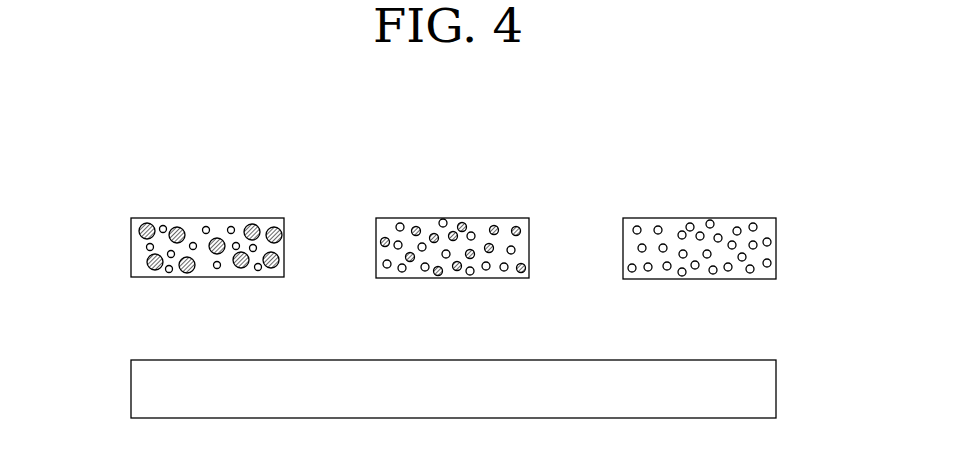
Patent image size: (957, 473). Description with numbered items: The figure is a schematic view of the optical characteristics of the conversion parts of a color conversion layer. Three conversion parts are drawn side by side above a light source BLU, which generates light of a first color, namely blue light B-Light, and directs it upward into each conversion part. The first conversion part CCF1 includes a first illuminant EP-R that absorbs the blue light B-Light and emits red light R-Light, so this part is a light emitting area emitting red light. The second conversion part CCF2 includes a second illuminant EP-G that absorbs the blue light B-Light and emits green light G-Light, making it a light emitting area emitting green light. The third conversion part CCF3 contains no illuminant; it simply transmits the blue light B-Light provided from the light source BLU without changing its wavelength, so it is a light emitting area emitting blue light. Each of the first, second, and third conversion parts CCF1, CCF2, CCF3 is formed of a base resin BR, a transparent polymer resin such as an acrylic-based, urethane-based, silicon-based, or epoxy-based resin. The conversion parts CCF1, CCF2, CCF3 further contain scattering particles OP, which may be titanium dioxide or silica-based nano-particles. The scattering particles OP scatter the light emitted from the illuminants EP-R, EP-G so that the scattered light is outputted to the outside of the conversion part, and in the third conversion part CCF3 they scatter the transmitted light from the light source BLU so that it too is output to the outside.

The first conversion part CCF1 is at (163, 218).
The second conversion part CCF2 is at (413, 218).
The third conversion part CCF3 is at (655, 218).
The first illuminant EP-R is at (132, 232).
The second illuminant EP-G is at (381, 241).
The base resin BR is at (138, 258).
The scattering particles OP is at (168, 272).
The light source BLU is at (767, 389).
The red light R-Light is at (207, 154).
The green light G-Light is at (453, 154).
The blue light B-Light is at (207, 296).